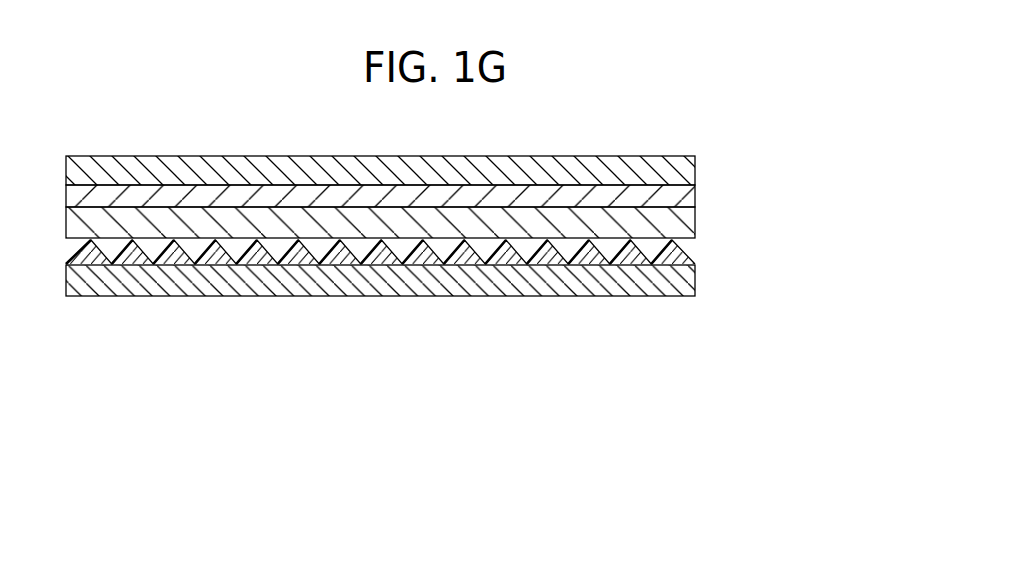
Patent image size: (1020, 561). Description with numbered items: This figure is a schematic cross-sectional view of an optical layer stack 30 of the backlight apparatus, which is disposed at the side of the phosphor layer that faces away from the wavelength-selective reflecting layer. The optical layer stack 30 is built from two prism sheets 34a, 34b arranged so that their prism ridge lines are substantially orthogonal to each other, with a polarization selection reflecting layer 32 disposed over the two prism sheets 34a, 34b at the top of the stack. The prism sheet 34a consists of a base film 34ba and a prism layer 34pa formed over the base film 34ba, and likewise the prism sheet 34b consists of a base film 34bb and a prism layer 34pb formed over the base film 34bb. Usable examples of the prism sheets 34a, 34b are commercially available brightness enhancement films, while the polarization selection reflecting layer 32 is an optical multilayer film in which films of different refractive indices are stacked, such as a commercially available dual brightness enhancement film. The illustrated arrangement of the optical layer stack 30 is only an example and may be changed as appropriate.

The optical layer stack 30 is at (477, 226).
The polarization selection reflecting layer 32 is at (697, 177).
The prism sheet 34a is at (458, 215).
The prism layer 34pa is at (695, 200).
The base film 34ba is at (695, 231).
The prism sheet 34b is at (455, 268).
The prism layer 34pb is at (689, 257).
The base film 34bb is at (695, 283).